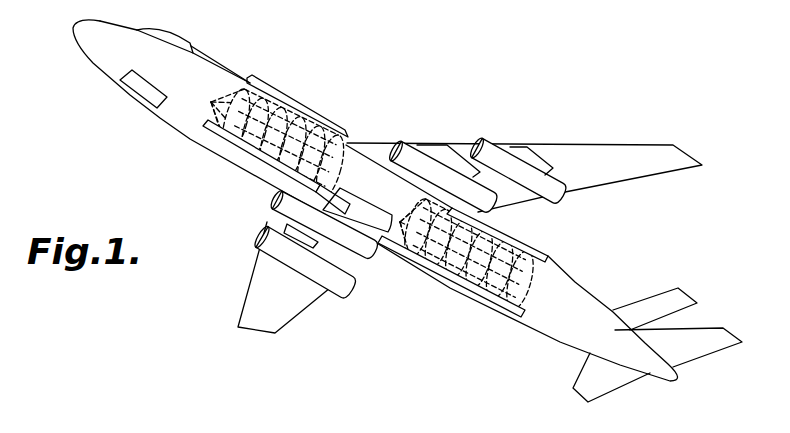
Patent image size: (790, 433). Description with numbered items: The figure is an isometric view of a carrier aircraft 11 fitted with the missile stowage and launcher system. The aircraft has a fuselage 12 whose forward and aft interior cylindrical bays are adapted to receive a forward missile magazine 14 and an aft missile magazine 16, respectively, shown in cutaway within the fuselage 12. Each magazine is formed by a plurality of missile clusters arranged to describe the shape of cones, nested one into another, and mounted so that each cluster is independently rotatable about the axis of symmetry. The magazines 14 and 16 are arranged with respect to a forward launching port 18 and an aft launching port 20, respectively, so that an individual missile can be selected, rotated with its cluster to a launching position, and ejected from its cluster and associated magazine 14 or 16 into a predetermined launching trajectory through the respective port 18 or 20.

The carrier aircraft 11 is at (250, 53).
The fuselage 12 is at (560, 270).
The forward missile magazine 14 is at (250, 74).
The aft missile magazine 16 is at (517, 226).
The forward launching port 18 is at (205, 130).
The aft launching port 20 is at (432, 258).